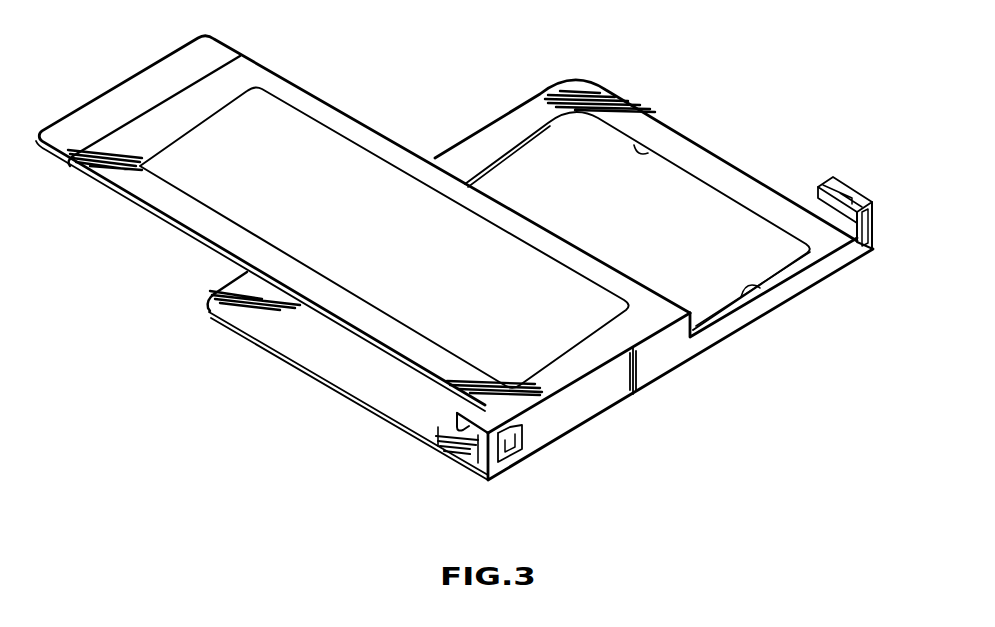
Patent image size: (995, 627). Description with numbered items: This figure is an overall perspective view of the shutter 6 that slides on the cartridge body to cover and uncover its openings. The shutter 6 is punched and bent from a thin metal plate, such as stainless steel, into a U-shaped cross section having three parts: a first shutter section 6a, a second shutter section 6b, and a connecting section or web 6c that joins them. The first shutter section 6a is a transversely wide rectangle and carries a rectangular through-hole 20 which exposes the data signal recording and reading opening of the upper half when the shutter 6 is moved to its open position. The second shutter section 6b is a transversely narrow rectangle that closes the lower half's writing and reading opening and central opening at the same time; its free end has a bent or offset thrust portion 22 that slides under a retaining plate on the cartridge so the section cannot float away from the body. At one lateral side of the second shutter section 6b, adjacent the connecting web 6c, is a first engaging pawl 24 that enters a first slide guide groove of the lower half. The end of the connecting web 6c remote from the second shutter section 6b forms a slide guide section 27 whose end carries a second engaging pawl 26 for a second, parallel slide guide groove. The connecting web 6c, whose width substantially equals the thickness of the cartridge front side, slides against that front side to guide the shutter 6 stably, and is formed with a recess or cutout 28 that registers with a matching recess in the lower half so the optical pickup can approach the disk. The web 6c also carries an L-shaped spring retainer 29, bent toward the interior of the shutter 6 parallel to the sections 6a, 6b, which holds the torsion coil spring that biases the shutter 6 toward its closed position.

The shutter 6 is at (475, 259).
The first shutter section 6a is at (262, 336).
The second shutter section 6b is at (267, 73).
The connecting section or web 6c is at (570, 424).
The rectangular through-hole 20 is at (653, 144).
The thrust portion 22 is at (363, 222).
The first engaging pawl 24 is at (441, 443).
The second engaging pawl 26 is at (821, 194).
The slide guide section 27 is at (873, 219).
The recess or cutout 28 is at (758, 291).
The spring retainer 29 is at (510, 467).